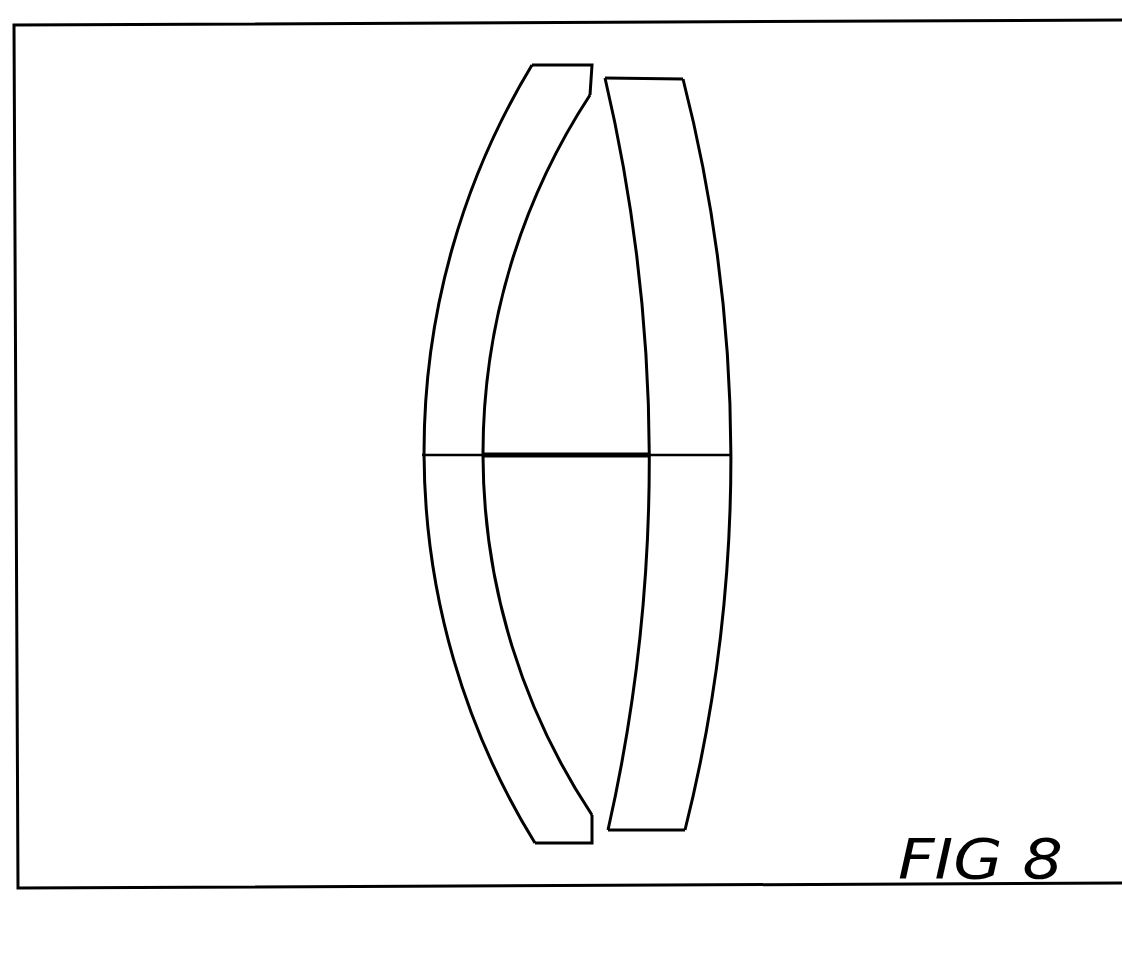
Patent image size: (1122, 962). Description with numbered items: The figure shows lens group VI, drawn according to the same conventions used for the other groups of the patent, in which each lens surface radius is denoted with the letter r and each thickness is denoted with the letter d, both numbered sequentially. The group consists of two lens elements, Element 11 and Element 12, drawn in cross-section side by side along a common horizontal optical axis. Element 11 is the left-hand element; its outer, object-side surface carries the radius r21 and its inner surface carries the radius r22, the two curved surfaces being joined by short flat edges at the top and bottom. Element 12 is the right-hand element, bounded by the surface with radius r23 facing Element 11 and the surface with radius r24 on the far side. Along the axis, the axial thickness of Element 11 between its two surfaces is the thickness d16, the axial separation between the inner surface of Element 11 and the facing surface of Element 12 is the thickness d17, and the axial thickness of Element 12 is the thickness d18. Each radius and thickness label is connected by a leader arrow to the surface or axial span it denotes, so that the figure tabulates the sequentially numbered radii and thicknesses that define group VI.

The radius r21 is at (442, 180).
The radius r22 is at (489, 258).
The radius r23 is at (654, 215).
The radius r24 is at (750, 276).
The thickness d16 is at (433, 466).
The thickness d17 is at (539, 469).
The thickness d18 is at (698, 465).
The lens element 11 is at (406, 456).
The lens element 12 is at (815, 448).
The group VI is at (590, 456).